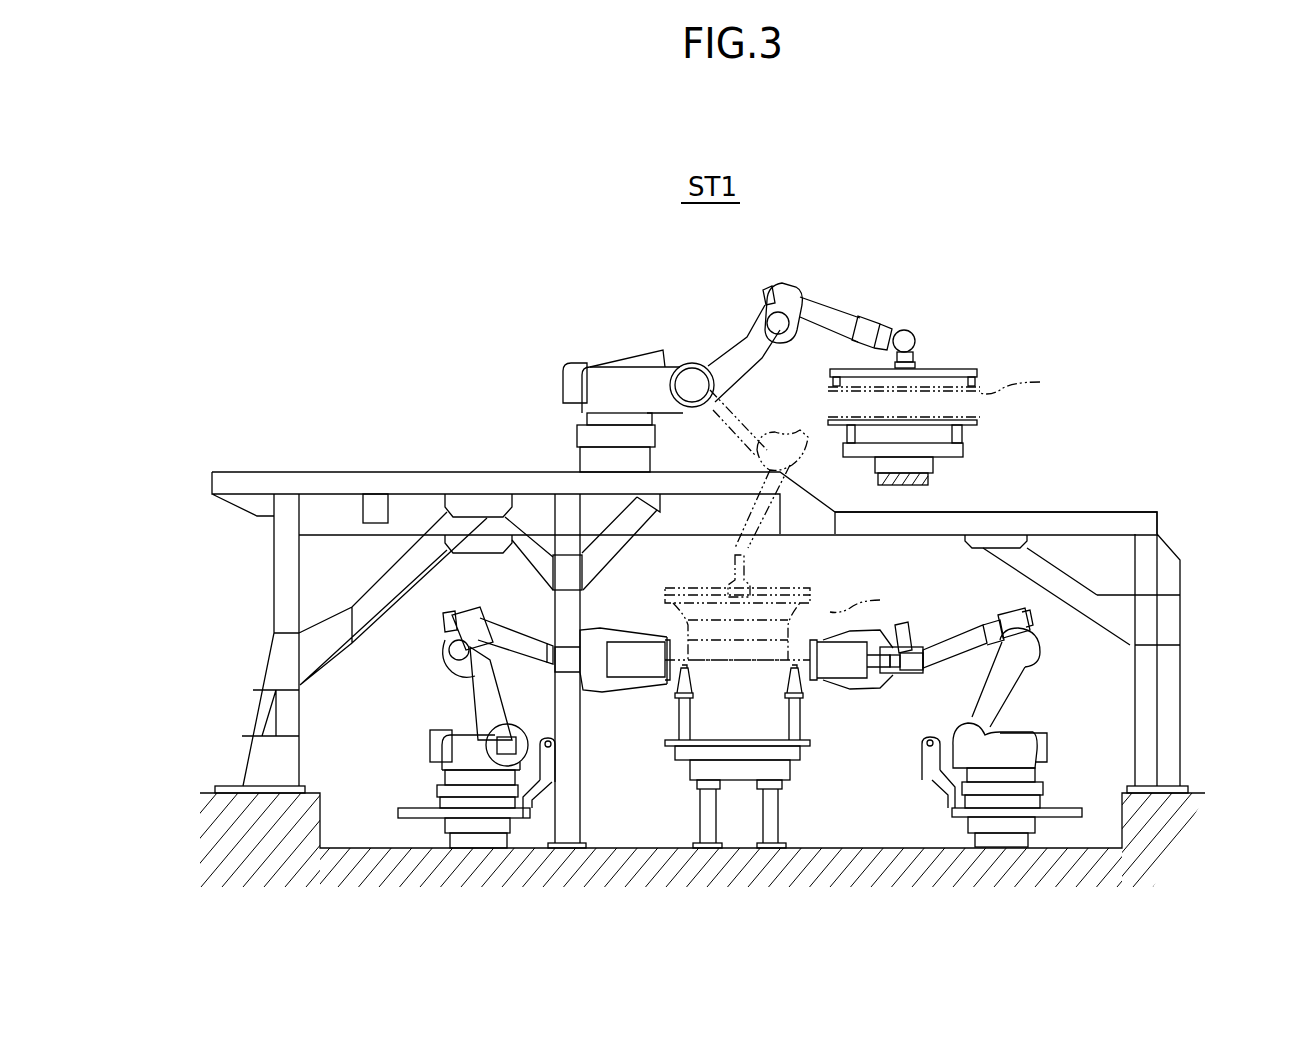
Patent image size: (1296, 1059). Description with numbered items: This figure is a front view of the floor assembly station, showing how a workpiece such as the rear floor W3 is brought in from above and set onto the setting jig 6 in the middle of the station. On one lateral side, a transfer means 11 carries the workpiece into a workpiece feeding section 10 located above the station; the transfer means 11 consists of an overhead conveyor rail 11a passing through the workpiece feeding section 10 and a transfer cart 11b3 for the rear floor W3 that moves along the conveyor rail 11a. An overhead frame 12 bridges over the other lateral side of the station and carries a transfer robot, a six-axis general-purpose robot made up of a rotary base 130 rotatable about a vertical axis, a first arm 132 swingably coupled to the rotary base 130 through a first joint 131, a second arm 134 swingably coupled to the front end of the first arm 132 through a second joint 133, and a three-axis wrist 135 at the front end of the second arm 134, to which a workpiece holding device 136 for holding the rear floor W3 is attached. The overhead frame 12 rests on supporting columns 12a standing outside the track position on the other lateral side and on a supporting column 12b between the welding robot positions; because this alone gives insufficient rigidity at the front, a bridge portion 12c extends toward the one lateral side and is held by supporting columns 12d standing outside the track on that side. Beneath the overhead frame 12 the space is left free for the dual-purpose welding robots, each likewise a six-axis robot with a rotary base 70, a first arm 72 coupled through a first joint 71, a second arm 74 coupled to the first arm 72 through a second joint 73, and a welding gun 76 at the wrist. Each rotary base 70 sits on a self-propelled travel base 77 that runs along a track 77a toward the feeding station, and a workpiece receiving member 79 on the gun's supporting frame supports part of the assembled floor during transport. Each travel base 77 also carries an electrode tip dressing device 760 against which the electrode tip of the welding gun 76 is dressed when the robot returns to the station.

The setting jig 6 is at (800, 745).
The workpiece feeding section 10 is at (920, 415).
The transfer means 11 is at (974, 454).
The overhead conveyor rail 11a is at (930, 478).
The transfer cart 11b3 is at (978, 440).
The overhead frame 12 is at (725, 620).
The supporting columns 12a is at (282, 603).
The supporting column 12b is at (572, 803).
The bridge portion 12c is at (1115, 510).
The supporting columns 12d is at (1150, 690).
The rotary base 70 is at (440, 792).
The first joint 71 is at (520, 745).
The first arm 72 is at (502, 743).
The second joint 73 is at (448, 653).
The second arm 74 is at (528, 648).
The welding gun 76 is at (640, 632).
The travel base 77 is at (432, 858).
The track 77a is at (485, 850).
The workpiece receiving member 79 is at (898, 682).
The electrode tip dressing device 760 is at (553, 764).
The rotary base 130 is at (583, 437).
The first joint 131 is at (690, 368).
The first arm 132 is at (738, 350).
The second joint 133 is at (652, 319).
The second arm 134 is at (828, 312).
The three-axis wrist 135 is at (905, 330).
The workpiece holding device 136 is at (975, 373).
The rear floor W3 is at (872, 514).